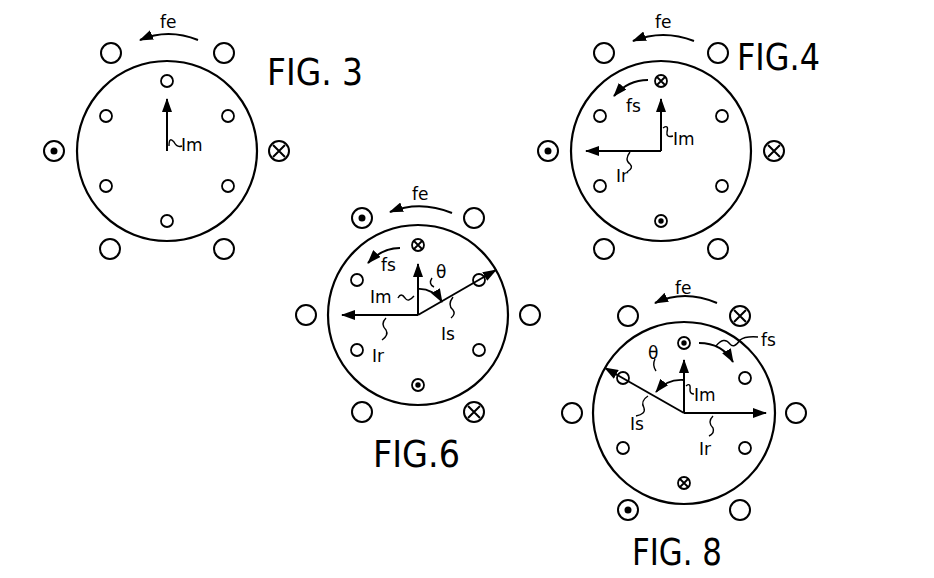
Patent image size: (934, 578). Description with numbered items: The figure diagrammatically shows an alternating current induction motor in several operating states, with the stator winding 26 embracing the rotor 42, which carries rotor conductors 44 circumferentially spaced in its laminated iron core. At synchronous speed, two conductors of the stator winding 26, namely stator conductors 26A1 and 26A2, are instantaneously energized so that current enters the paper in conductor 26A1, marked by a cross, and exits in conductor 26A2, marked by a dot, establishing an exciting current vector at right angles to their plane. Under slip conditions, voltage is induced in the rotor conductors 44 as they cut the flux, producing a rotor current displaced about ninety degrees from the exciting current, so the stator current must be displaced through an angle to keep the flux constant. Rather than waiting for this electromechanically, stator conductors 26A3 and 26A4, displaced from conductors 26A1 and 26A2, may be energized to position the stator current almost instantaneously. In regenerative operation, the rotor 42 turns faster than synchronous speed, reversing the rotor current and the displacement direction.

In FIG. 3, the stator winding 26 is at (232, 45).
In FIG. 3, the stator conductor 26A1 is at (287, 128).
In FIG. 4, the stator conductor 26A1 is at (772, 161).
In FIG. 3, the stator conductor 26A2 is at (52, 161).
In FIG. 4, the stator conductor 26A2 is at (544, 159).
In FIG. 6, the stator conductor 26A3 is at (477, 422).
In FIG. 8, the stator conductor 26A3 is at (737, 306).
In FIG. 6, the stator conductor 26A4 is at (356, 227).
In FIG. 8, the stator conductor 26A4 is at (622, 519).
In FIG. 3, the rotor 42 is at (247, 108).
In FIG. 4, the rotor 42 is at (734, 209).
In FIG. 6, the rotor 42 is at (501, 283).
In FIG. 8, the rotor 42 is at (758, 473).
In FIG. 3, the rotor conductors 44 is at (233, 189).
In FIG. 4, the rotor conductors 44 is at (728, 115).
In FIG. 6, the rotor conductors 44 is at (484, 353).
In FIG. 8, the rotor conductors 44 is at (751, 377).